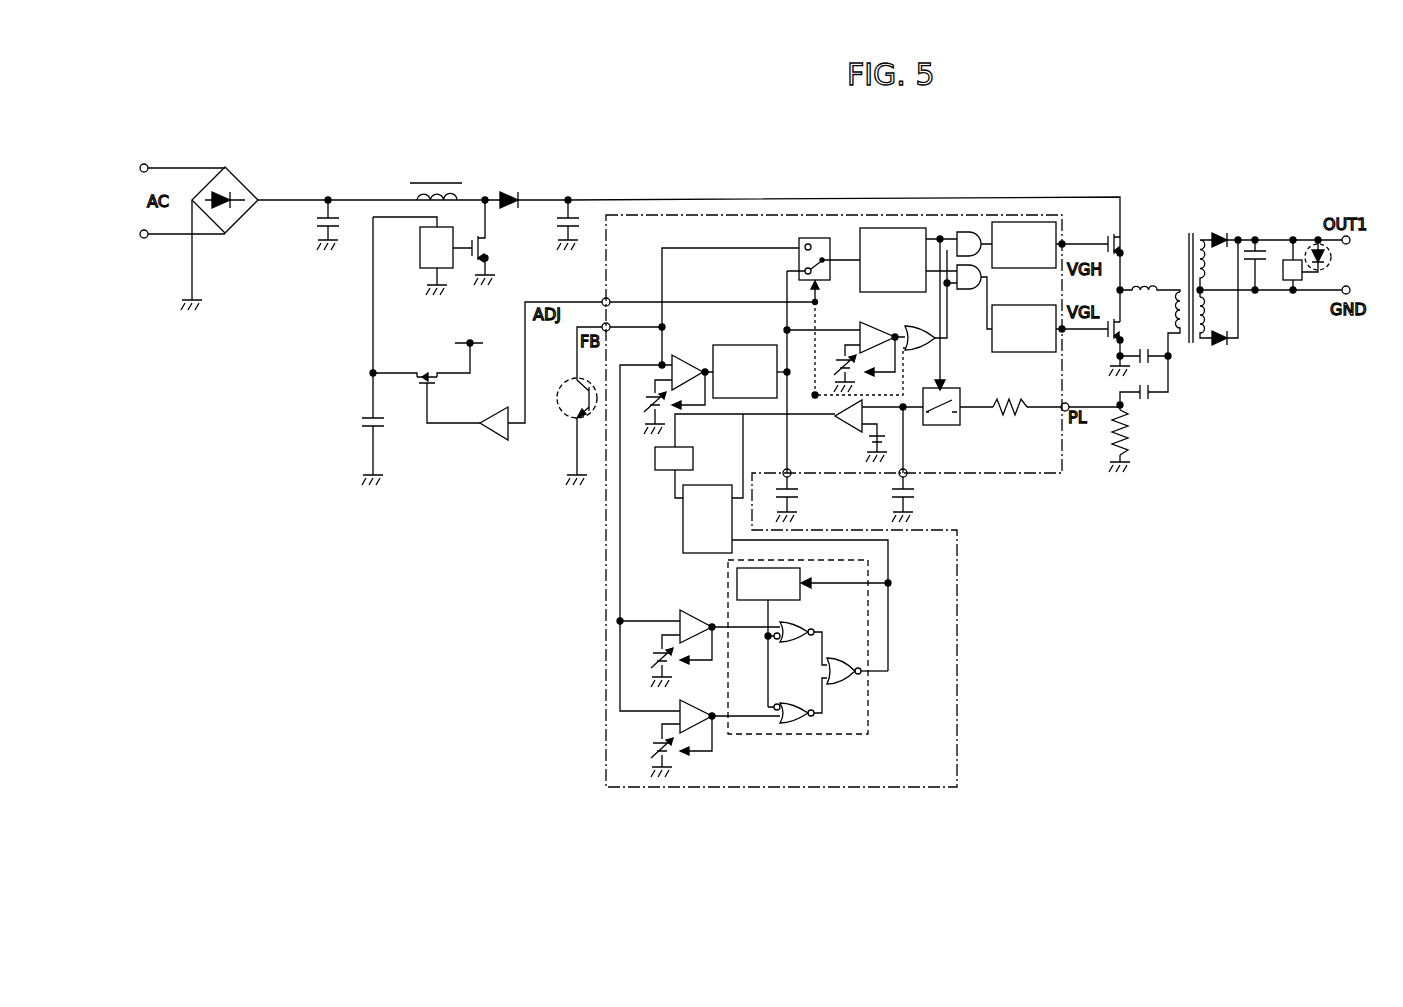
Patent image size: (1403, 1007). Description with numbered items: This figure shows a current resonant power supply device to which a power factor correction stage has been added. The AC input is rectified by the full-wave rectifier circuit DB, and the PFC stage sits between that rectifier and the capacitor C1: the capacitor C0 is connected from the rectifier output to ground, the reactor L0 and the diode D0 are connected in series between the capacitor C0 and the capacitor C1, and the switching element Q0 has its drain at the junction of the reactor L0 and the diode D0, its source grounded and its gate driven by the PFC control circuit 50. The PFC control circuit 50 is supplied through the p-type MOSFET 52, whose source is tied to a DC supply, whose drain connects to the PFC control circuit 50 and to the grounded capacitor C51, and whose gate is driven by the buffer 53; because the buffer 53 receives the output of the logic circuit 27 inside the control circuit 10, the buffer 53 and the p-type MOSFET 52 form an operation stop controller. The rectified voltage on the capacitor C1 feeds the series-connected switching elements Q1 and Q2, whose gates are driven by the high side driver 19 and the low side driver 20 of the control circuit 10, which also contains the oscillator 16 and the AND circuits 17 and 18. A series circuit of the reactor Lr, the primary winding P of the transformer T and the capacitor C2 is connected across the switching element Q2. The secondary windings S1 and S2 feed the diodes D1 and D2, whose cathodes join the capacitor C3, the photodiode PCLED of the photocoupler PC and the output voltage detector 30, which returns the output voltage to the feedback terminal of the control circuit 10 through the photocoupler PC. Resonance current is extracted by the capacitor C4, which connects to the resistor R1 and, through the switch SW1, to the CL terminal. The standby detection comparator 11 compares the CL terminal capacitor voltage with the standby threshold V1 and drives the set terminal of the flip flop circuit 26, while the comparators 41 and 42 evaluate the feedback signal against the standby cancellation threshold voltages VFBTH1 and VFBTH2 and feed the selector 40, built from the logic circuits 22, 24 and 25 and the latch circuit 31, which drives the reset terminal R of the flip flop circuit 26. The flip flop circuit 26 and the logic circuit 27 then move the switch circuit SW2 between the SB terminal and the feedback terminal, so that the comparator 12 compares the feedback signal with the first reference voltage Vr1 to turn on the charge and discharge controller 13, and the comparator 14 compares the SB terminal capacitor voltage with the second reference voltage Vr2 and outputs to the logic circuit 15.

The control circuit 10 is at (606, 562).
The standby detection comparator 11 is at (838, 426).
The comparator 12 is at (685, 355).
The charge and discharge controller 13 is at (746, 345).
The comparator 14 is at (882, 318).
The logic circuit 15 is at (919, 328).
The oscillator 16 is at (891, 228).
The AND circuit 17 is at (967, 232).
The AND circuit 18 is at (968, 289).
The high side driver 19 is at (1034, 222).
The low side driver 20 is at (1040, 352).
The logic circuit 22 is at (798, 642).
The logic circuit 24 is at (798, 703).
The logic circuit 25 is at (840, 658).
The flip flop circuit 26 is at (683, 531).
The logic circuit 27 is at (695, 458).
The output voltage detector 30 is at (1290, 282).
The latch circuit 31 is at (800, 597).
The selector 40 is at (868, 712).
The comparator 41 is at (698, 610).
The comparator 42 is at (698, 710).
The PFC control circuit 50 is at (422, 268).
The p-type MOSFET 52 is at (428, 374).
The buffer 53 is at (541, 371).
The full-wave rectifier circuit DB is at (225, 186).
The capacitor C0 is at (313, 223).
The reactor L0 is at (436, 179).
The diode D0 is at (501, 185).
The capacitor C1 is at (577, 223).
The switching element Q0 is at (486, 242).
The capacitor C51 is at (389, 451).
The photocoupler PC is at (567, 431).
The switch circuit SW2 is at (818, 238).
The first reference voltage Vr1 is at (650, 404).
The second reference voltage Vr2 is at (839, 364).
The standby threshold V1 is at (865, 443).
The switch SW1 is at (945, 425).
The reset terminal R is at (1010, 397).
The SB terminal SB is at (791, 478).
The CL terminal CL is at (907, 478).
The standby cancellation threshold voltage for the non-oscillation period VFBTH1 is at (648, 658).
The standby cancellation threshold voltage for the oscillation period VFBTH2 is at (648, 748).
The switching element Q1 is at (1126, 246).
The switching element Q2 is at (1126, 324).
The reactor Lr is at (1150, 278).
The primary winding P is at (1170, 324).
The capacitor C2 is at (1140, 351).
The capacitor C4 is at (1142, 389).
The resistor R1 is at (1131, 438).
The transformer T is at (1190, 279).
The secondary winding S1 is at (1213, 268).
The secondary winding S2 is at (1215, 317).
The diode D1 is at (1277, 230).
The diode D2 is at (1225, 305).
The capacitor C3 is at (1262, 265).
The photocoupler light emitting diode PCLED is at (1330, 256).